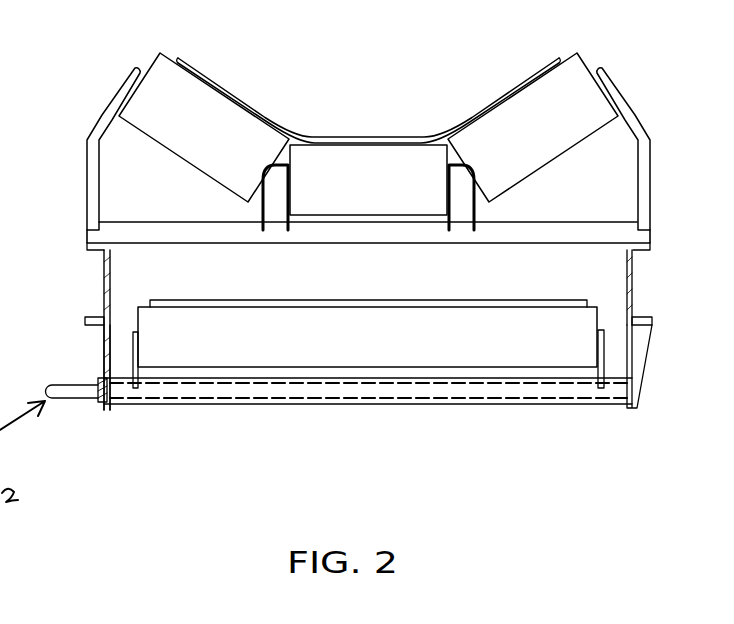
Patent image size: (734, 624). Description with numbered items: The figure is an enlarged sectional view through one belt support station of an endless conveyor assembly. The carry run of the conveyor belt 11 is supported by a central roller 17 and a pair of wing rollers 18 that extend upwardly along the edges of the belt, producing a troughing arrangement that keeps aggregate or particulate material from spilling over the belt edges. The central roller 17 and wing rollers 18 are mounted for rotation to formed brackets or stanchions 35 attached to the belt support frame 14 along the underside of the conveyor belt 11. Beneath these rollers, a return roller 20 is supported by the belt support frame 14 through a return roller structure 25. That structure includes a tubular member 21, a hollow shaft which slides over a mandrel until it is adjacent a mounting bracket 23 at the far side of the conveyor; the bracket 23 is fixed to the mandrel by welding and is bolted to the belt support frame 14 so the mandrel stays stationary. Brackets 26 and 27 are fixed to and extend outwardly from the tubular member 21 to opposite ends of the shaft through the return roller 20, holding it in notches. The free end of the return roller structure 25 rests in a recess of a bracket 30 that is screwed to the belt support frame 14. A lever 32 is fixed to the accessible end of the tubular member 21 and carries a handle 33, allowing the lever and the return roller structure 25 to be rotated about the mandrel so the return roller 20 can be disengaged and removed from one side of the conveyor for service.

The conveyor belt 11 is at (495, 300).
The belt support frame 14 is at (100, 282).
The central roller 17 is at (386, 180).
The wing roller 18 is at (368, 127).
The return roller 20 is at (367, 337).
The tubular member 21 is at (573, 402).
The bracket 23 is at (637, 343).
The return roller structure 25 is at (369, 440).
The bracket 26 is at (133, 360).
The bracket 27 is at (605, 358).
The bracket 30 is at (103, 355).
The lever 32 is at (97, 404).
The handle 33 is at (65, 392).
The stanchions 35 is at (115, 113).